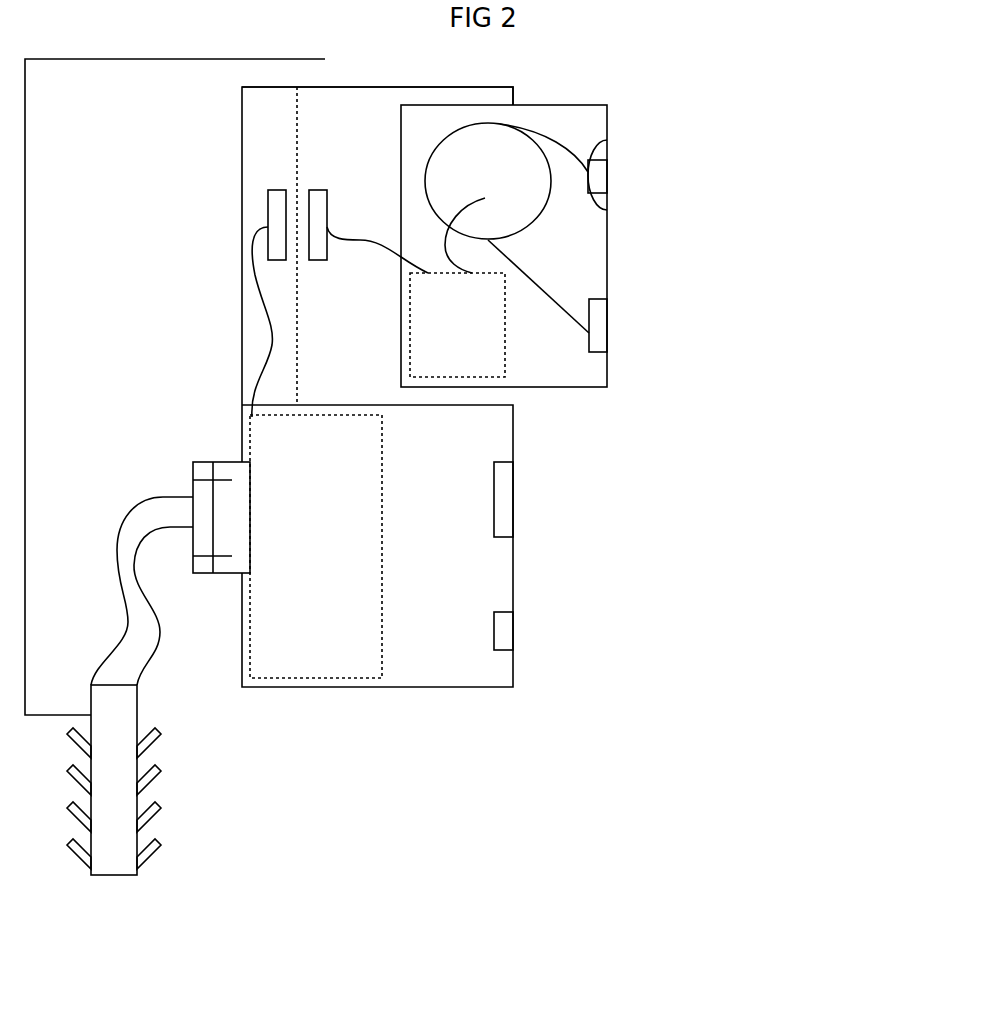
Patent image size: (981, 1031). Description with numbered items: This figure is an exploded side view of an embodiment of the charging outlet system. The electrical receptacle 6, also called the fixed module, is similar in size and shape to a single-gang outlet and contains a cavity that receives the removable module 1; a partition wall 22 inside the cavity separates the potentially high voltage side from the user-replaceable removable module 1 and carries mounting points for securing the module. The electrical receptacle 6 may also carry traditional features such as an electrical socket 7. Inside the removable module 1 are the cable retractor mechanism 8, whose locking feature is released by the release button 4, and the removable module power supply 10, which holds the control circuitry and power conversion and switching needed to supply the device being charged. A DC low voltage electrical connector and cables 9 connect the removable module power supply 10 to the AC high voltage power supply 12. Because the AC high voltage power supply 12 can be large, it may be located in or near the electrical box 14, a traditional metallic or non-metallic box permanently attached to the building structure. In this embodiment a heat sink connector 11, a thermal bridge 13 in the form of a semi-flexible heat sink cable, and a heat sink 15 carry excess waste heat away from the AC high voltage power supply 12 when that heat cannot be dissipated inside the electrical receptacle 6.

The removable module 1 is at (618, 125).
The release button 4 is at (615, 307).
The electrical receptacle 6 is at (520, 87).
The electrical socket 7 is at (522, 523).
The cable retractor mechanism 8 is at (553, 172).
The DC low voltage electrical connector and cables 9 is at (333, 208).
The removable module power supply 10 is at (513, 359).
The heat sink connector 11 is at (258, 472).
The AC high voltage power supply 12 is at (390, 579).
The thermal bridge 13 is at (155, 658).
The electrical box 14 is at (137, 715).
The heat sink 15 is at (173, 827).
The partition wall 22 is at (305, 397).